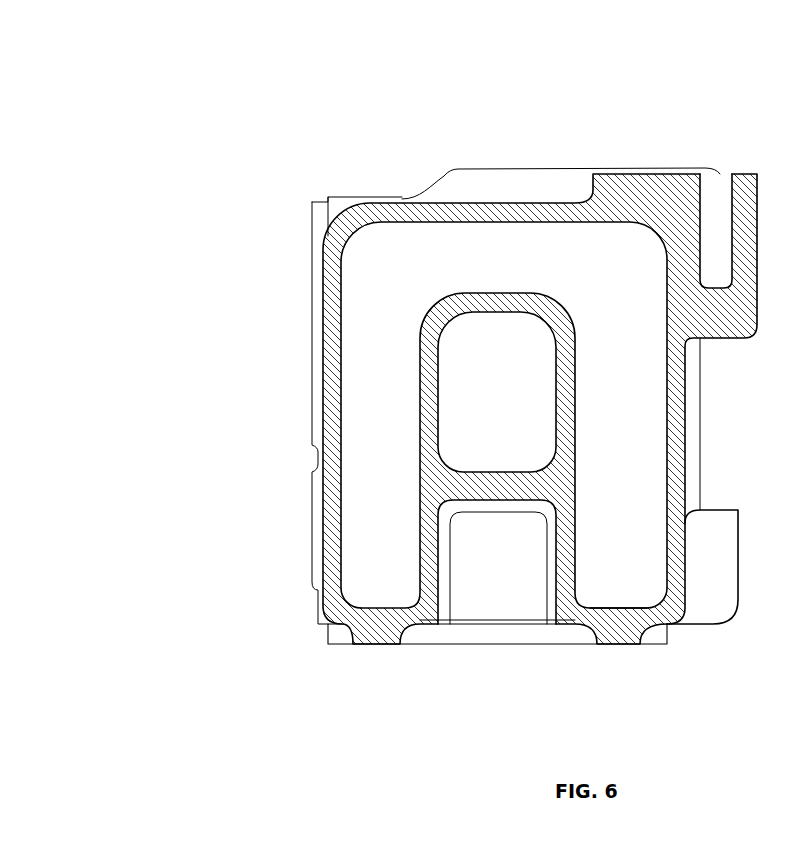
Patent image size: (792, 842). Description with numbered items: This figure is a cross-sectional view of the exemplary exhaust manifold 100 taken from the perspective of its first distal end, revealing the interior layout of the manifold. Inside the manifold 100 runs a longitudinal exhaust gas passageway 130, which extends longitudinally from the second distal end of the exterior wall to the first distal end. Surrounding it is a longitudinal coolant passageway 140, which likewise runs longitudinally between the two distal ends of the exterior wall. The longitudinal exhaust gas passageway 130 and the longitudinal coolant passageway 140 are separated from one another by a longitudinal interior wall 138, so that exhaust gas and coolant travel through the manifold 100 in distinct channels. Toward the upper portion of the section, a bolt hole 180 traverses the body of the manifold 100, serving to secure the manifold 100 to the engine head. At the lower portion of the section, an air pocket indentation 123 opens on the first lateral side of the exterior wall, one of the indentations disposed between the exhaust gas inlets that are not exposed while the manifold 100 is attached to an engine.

The exhaust manifold 100 is at (118, 76).
The longitudinal coolant passageway 140 is at (385, 255).
The longitudinal interior wall 138 is at (458, 293).
The longitudinal exhaust gas passageway 130 is at (515, 333).
The bolt holes 180 is at (722, 203).
The air pocket indentation 123 is at (480, 585).